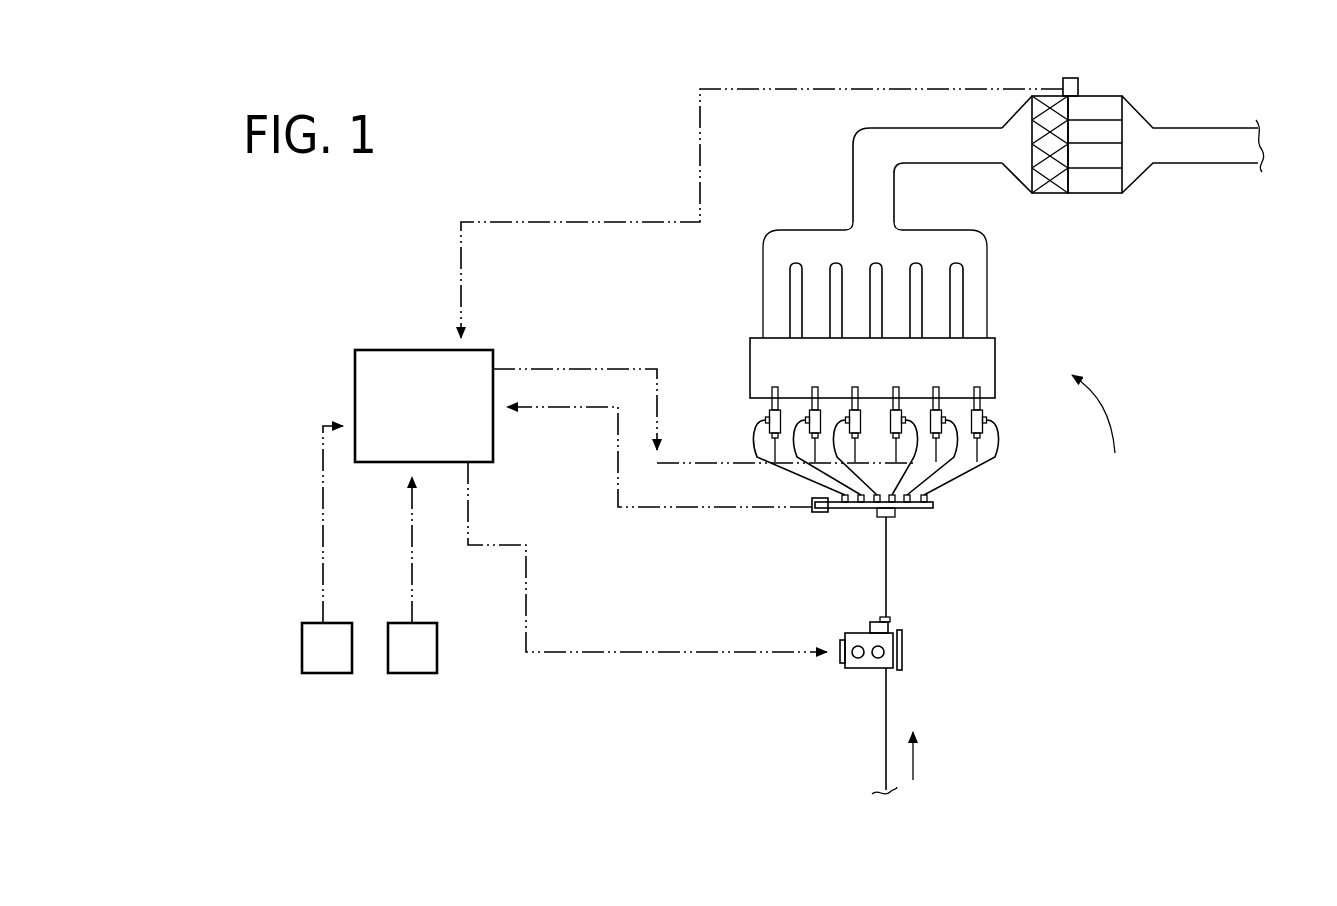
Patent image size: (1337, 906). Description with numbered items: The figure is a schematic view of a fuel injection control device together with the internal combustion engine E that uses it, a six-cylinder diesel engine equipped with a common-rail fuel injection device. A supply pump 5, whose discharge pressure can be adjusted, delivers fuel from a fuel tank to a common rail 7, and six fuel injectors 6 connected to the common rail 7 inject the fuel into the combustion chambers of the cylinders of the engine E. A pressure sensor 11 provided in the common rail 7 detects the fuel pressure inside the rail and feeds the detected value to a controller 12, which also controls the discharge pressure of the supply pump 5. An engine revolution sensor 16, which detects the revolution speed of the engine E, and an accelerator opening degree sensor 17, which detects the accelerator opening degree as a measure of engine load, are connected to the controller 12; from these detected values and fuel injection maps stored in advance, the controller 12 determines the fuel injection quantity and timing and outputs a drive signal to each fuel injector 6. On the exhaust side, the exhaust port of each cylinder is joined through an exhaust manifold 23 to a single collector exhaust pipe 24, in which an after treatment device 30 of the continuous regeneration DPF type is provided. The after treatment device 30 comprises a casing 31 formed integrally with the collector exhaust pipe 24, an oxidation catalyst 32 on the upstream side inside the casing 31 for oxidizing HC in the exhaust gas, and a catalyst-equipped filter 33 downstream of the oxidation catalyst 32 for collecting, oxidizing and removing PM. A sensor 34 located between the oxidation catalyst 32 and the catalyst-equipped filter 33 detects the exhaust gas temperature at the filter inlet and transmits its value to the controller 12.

The supply pump 5 is at (885, 662).
The fuel injector 6 is at (769, 413).
The common rail 7 is at (917, 507).
The pressure sensor 11 is at (818, 512).
The controller 12 is at (400, 350).
The engine revolution sensor 16 is at (327, 673).
The accelerator opening degree sensor 17 is at (413, 673).
The exhaust manifold 23 is at (778, 292).
The collector exhaust pipe 24 is at (862, 168).
The after treatment device 30 is at (1110, 121).
The casing 31 is at (1010, 170).
The oxidation catalyst 32 is at (1043, 192).
The catalyst-equipped filter 33 is at (1103, 185).
The exhaust gas temperature sensor 34 is at (1070, 78).
The engine E is at (1097, 429).